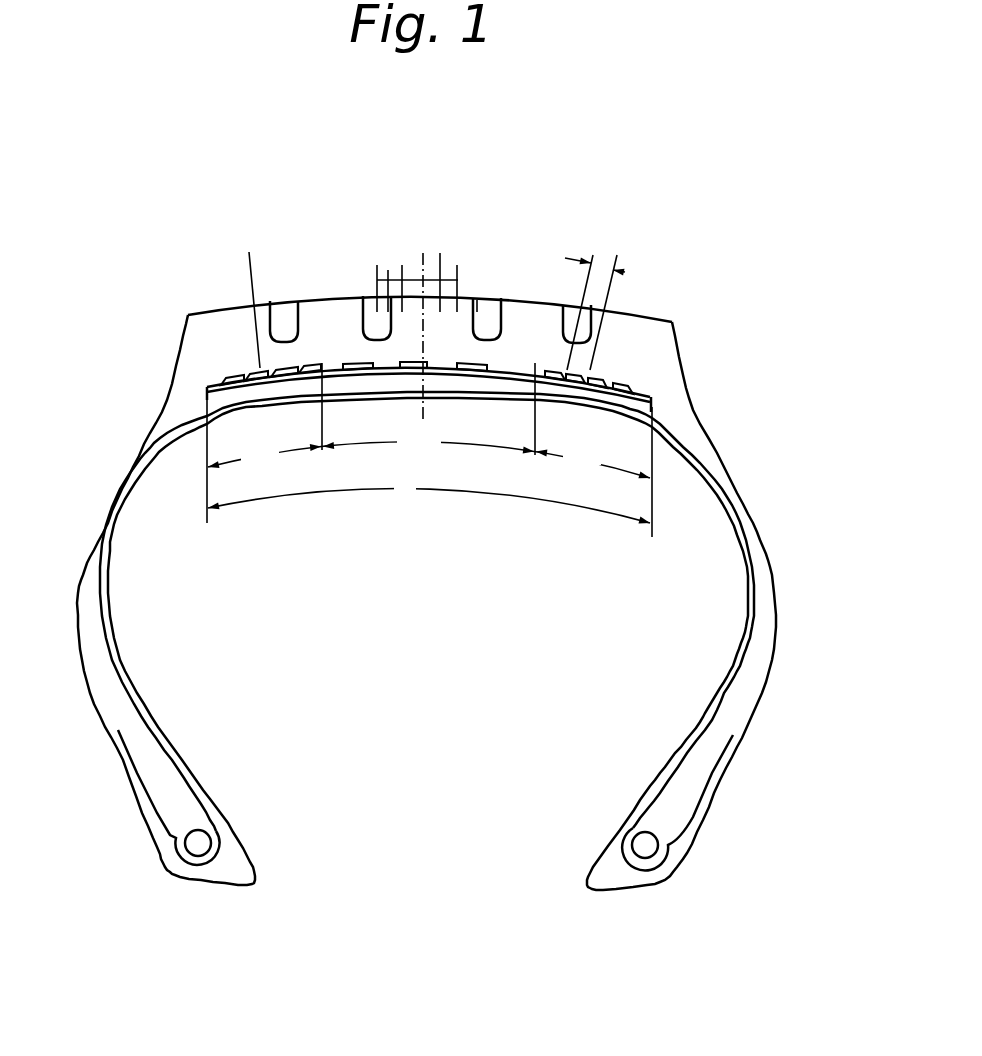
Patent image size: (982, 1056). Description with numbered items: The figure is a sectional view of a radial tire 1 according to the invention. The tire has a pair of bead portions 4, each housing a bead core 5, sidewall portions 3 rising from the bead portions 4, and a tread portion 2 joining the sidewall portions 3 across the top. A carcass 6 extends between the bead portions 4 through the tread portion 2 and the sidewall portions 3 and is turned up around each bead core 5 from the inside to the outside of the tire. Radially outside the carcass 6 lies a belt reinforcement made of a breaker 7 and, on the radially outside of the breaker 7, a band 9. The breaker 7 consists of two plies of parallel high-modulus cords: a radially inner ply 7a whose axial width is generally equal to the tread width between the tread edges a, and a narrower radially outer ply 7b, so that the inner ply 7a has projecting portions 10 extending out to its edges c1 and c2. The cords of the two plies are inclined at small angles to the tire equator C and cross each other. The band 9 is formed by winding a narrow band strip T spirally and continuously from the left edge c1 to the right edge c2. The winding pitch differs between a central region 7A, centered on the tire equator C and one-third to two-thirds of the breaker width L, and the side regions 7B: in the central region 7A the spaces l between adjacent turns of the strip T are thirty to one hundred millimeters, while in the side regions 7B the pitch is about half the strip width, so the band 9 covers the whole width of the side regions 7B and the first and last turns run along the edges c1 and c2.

The radial tire 1 is at (456, 518).
The tread portion 2 is at (493, 281).
The sidewall portions 3 is at (773, 530).
The bead portions 4 is at (723, 800).
The bead cores 5 is at (645, 847).
The carcass 6 is at (750, 638).
The breaker 7 is at (428, 264).
The radially inner ply 7a is at (345, 364).
The radially outer ply 7b is at (336, 366).
The band 9 is at (233, 353).
The projecting portions 10 is at (210, 394).
The band strip T is at (249, 294).
The tread edges a is at (188, 315).
The left edge of the inner ply c1 is at (207, 398).
The right edge of the inner ply c2 is at (653, 400).
The tire equator C is at (420, 402).
The breaker width L is at (429, 498).
The central region 7A is at (419, 443).
The side regions 7B is at (429, 450).
The spaces l is at (392, 256).